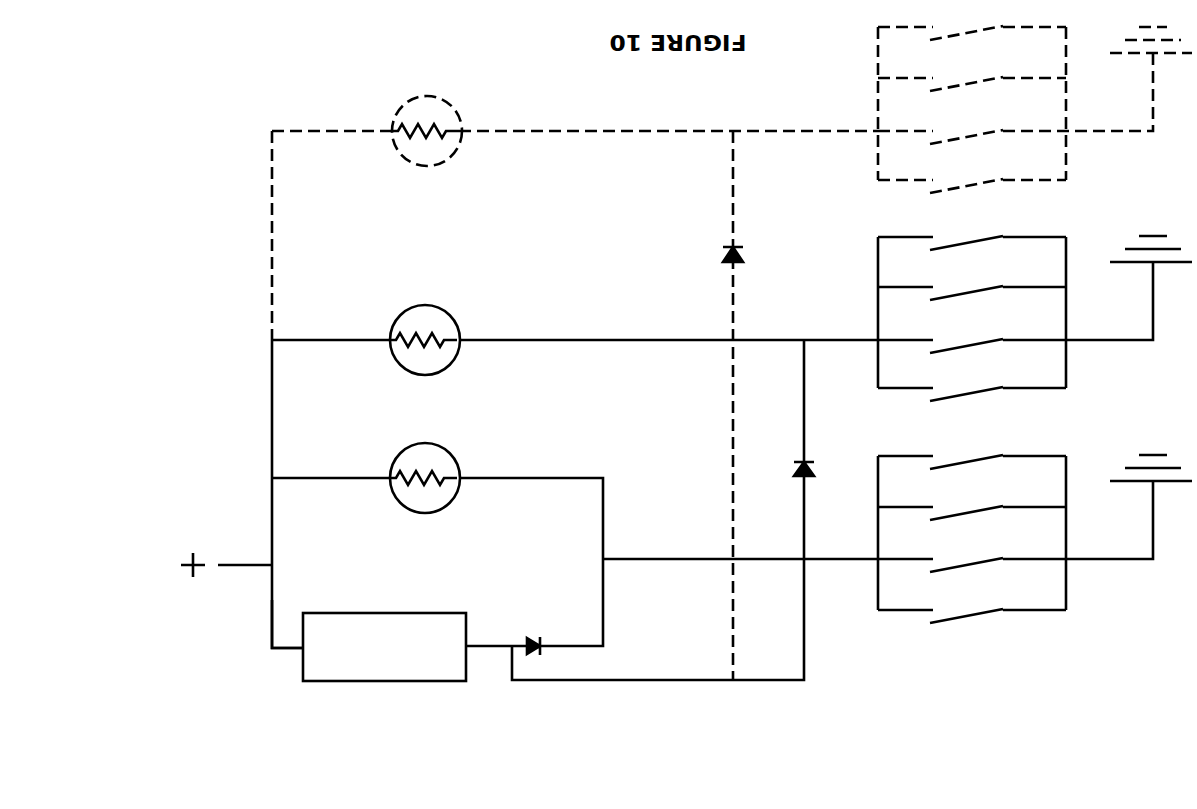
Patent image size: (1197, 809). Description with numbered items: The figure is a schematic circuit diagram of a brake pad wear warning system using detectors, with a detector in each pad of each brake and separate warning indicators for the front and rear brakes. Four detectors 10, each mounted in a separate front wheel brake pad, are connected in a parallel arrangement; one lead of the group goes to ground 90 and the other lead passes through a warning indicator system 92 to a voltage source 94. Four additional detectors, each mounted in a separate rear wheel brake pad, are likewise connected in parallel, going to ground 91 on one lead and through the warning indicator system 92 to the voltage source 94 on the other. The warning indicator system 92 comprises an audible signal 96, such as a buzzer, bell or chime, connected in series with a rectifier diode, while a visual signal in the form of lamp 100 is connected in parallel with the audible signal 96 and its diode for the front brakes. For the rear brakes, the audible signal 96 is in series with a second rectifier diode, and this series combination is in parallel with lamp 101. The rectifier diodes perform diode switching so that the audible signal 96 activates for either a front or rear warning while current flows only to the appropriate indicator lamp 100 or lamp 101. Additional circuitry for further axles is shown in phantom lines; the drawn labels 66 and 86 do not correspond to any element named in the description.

The detector 10 is at (997, 238).
The diode 66 is at (797, 464).
The diode 86 is at (535, 640).
The ground 90 is at (1143, 483).
The ground 91 is at (1148, 263).
The warning indicator system 92 is at (281, 651).
The voltage source 94 is at (185, 570).
The audible signal 96 is at (332, 684).
The lamp 100 is at (420, 512).
The lamp 101 is at (420, 376).